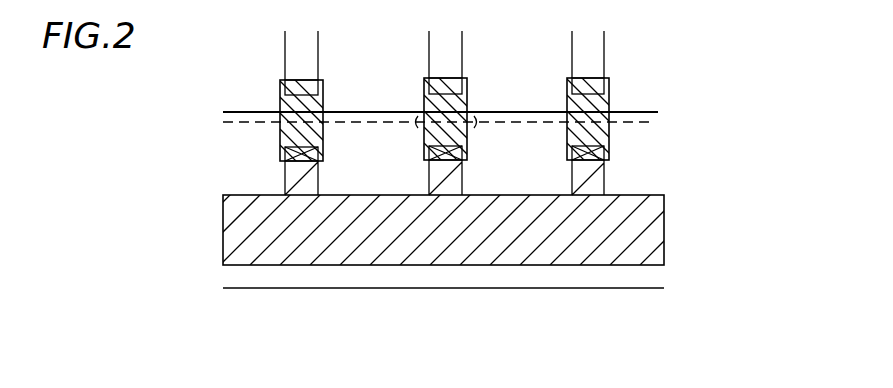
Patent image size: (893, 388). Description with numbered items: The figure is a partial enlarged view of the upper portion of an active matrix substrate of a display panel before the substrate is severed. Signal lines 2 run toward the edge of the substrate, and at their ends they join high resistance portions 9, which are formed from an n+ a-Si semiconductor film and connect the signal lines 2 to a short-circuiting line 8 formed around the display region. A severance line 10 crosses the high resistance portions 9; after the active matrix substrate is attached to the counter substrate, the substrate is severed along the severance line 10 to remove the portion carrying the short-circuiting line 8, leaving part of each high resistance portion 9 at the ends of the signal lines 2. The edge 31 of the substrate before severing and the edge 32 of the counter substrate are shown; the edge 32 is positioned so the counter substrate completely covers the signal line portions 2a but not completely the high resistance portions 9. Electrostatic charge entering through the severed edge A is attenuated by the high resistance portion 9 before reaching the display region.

The signal line 2 is at (517, 102).
The signal line portion 2a is at (598, 51).
The high resistance portion 9 is at (607, 100).
The severance line 10 is at (630, 125).
The short-circuiting line 8 is at (652, 233).
The edge of the substrate 31 is at (277, 290).
The edge of the counter substrate 32 is at (237, 111).
The severed substrate edge A is at (478, 116).